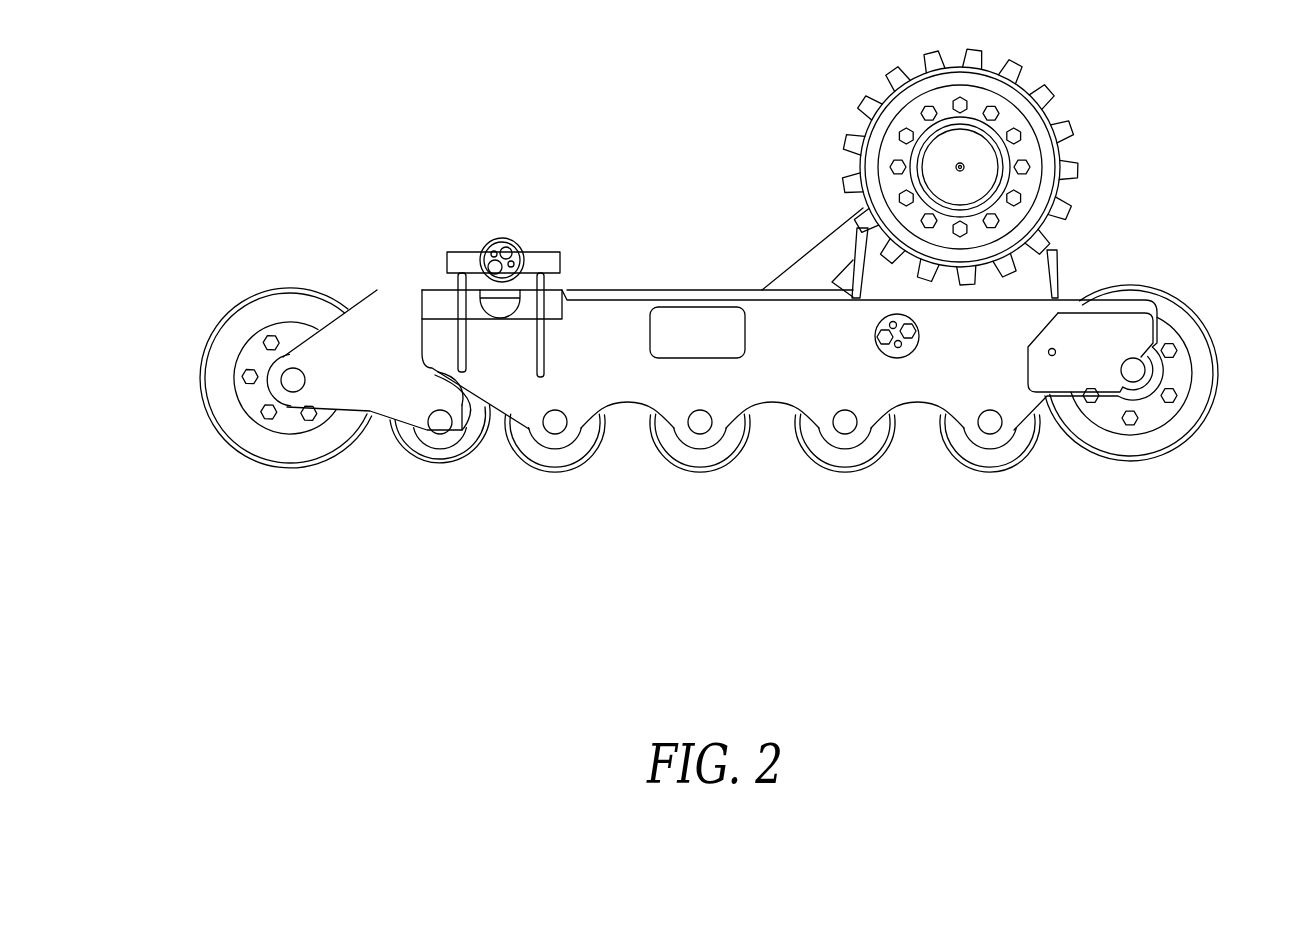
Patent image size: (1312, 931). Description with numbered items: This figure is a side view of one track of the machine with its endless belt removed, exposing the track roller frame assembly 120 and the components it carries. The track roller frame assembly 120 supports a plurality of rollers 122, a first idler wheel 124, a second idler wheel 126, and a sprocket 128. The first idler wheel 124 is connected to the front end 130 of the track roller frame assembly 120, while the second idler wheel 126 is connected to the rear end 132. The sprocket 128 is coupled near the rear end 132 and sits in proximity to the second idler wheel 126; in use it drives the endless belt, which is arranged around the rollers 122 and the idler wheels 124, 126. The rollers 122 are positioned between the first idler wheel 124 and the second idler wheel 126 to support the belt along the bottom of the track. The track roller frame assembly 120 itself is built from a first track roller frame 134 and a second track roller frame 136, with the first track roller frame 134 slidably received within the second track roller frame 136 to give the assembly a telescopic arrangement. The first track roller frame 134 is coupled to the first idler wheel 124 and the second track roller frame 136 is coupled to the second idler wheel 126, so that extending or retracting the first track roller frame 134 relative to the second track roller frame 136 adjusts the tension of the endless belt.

The track roller frame assembly 120 is at (674, 286).
The rollers 122 is at (456, 459).
The first idler wheel 124 is at (293, 458).
The second idler wheel 126 is at (1198, 398).
The sprocket 128 is at (1028, 84).
The front end 130 is at (288, 357).
The rear end 132 is at (1146, 331).
The first track roller frame 134 is at (384, 330).
The second track roller frame 136 is at (804, 328).